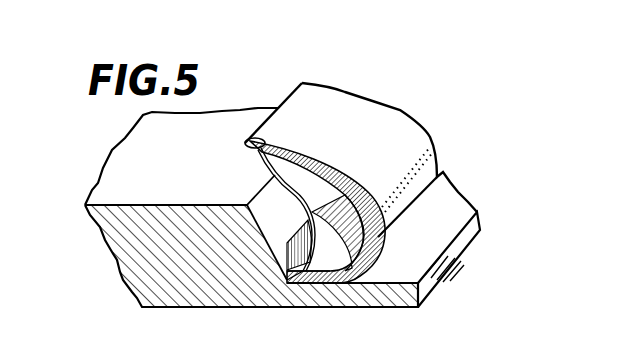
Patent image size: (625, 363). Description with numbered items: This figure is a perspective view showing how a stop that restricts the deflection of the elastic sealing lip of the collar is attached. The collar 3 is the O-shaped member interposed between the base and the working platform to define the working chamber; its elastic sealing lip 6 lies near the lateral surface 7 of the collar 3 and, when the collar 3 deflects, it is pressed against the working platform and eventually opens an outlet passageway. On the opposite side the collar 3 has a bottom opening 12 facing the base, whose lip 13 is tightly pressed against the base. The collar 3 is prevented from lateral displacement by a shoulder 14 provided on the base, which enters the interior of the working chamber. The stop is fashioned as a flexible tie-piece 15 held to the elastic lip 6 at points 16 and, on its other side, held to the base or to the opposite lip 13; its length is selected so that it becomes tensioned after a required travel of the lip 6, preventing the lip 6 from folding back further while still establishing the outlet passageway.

The collar 3 is at (352, 284).
The elastic sealing lip 6 is at (244, 146).
The lateral surface 7 is at (384, 222).
The bottom opening 12 is at (284, 274).
The lip 13 is at (323, 284).
The shoulder 14 is at (259, 268).
The flexible tie-piece 15 is at (302, 197).
The points 16 is at (257, 166).